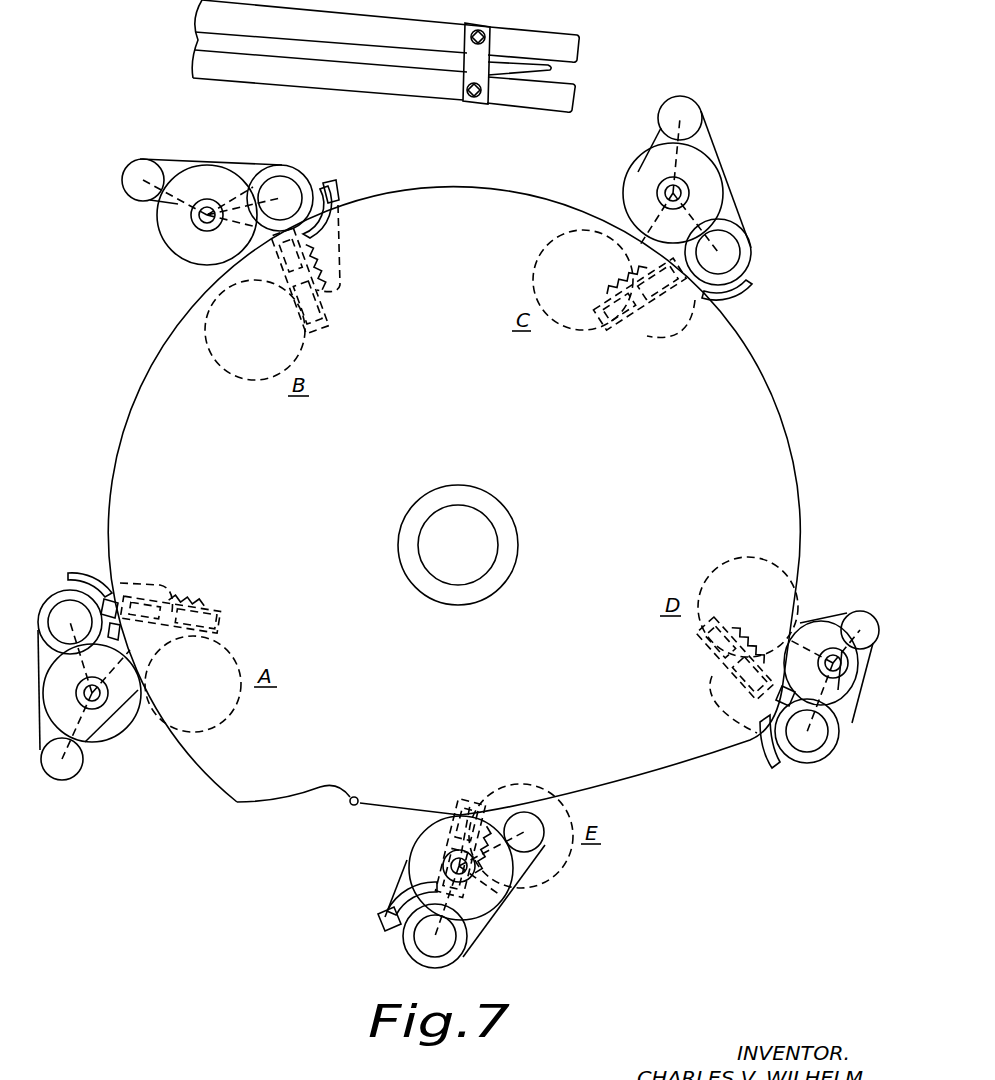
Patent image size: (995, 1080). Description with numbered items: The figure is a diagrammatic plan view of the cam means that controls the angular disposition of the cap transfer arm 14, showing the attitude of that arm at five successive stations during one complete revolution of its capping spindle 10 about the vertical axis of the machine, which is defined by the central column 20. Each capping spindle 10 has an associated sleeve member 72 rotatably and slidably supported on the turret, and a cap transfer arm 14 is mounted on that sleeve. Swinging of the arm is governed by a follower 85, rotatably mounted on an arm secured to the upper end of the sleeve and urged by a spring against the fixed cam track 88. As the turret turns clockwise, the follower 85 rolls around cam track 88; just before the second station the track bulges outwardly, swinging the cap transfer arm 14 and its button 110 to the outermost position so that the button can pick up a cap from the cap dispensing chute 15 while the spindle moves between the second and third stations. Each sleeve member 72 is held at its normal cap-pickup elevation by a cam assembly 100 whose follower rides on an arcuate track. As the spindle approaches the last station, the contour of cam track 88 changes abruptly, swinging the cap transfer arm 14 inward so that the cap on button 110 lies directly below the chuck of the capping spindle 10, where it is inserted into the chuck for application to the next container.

The capping spindle 10 is at (301, 355).
The cap transfer arm 14 is at (178, 158).
The cap dispensing chute 15 is at (555, 37).
The central column 20 is at (487, 530).
The sleeve member 72 is at (287, 168).
The follower 85 is at (188, 247).
The cam track 88 is at (188, 286).
The cam assembly 100 is at (342, 194).
The button 110 is at (124, 180).